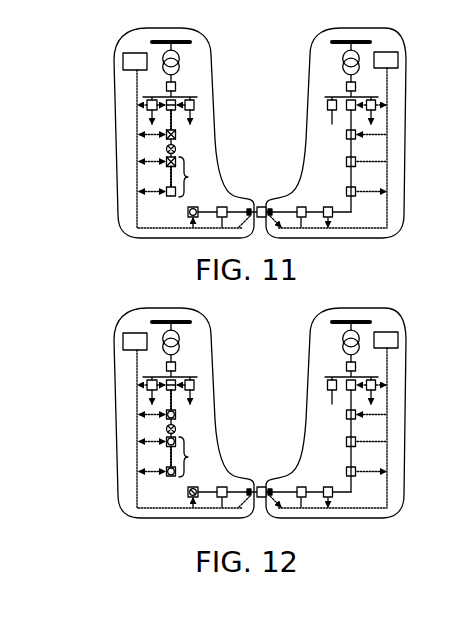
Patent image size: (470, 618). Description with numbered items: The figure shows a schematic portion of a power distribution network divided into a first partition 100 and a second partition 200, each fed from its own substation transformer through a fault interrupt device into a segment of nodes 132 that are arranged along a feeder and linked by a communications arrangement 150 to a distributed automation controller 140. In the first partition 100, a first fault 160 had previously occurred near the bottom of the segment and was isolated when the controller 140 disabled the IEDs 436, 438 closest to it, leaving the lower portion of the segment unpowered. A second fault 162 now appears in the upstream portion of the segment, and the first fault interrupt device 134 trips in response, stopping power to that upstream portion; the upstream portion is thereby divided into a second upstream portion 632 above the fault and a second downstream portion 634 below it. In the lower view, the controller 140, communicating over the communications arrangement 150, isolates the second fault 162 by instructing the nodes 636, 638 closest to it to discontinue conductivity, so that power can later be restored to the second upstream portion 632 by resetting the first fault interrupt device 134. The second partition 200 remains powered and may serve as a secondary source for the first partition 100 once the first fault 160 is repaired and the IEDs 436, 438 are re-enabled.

In FIG. 11, the first partition 100 is at (148, 28).
In FIG. 12, the first partition 100 is at (180, 400).
In FIG. 11, the second partition 200 is at (382, 28).
In FIG. 12, the second partition 200 is at (351, 403).
In FIG. 11, the distributed automation controller 140 is at (128, 54).
In FIG. 12, the distributed automation controller 140 is at (105, 333).
In FIG. 11, the communications arrangement 150 is at (136, 92).
In FIG. 12, the communications arrangement 150 is at (153, 429).
In FIG. 11, the first fault interrupt device 134 is at (176, 100).
In FIG. 12, the first fault interrupt device 134 is at (217, 364).
In FIG. 11, the second upstream portion 632 is at (191, 122).
In FIG. 12, the second upstream portion 632 is at (226, 390).
In FIG. 11, the second fault 162 is at (175, 147).
In FIG. 12, the second fault 162 is at (212, 420).
In FIG. 11, the second downstream portion 634 is at (188, 177).
In FIG. 12, the second downstream portion 634 is at (223, 454).
In FIG. 11, the nodes 132 is at (166, 161).
In FIG. 11, the first fault 160 is at (175, 210).
In FIG. 12, the first fault 160 is at (214, 509).
In FIG. 12, the node closest to second fault 636 is at (119, 413).
In FIG. 12, the node closest to second fault 638 is at (119, 442).
In FIG. 12, the IED closest to first fault 436 is at (119, 463).
In FIG. 12, the IED closest to first fault 438 is at (157, 519).